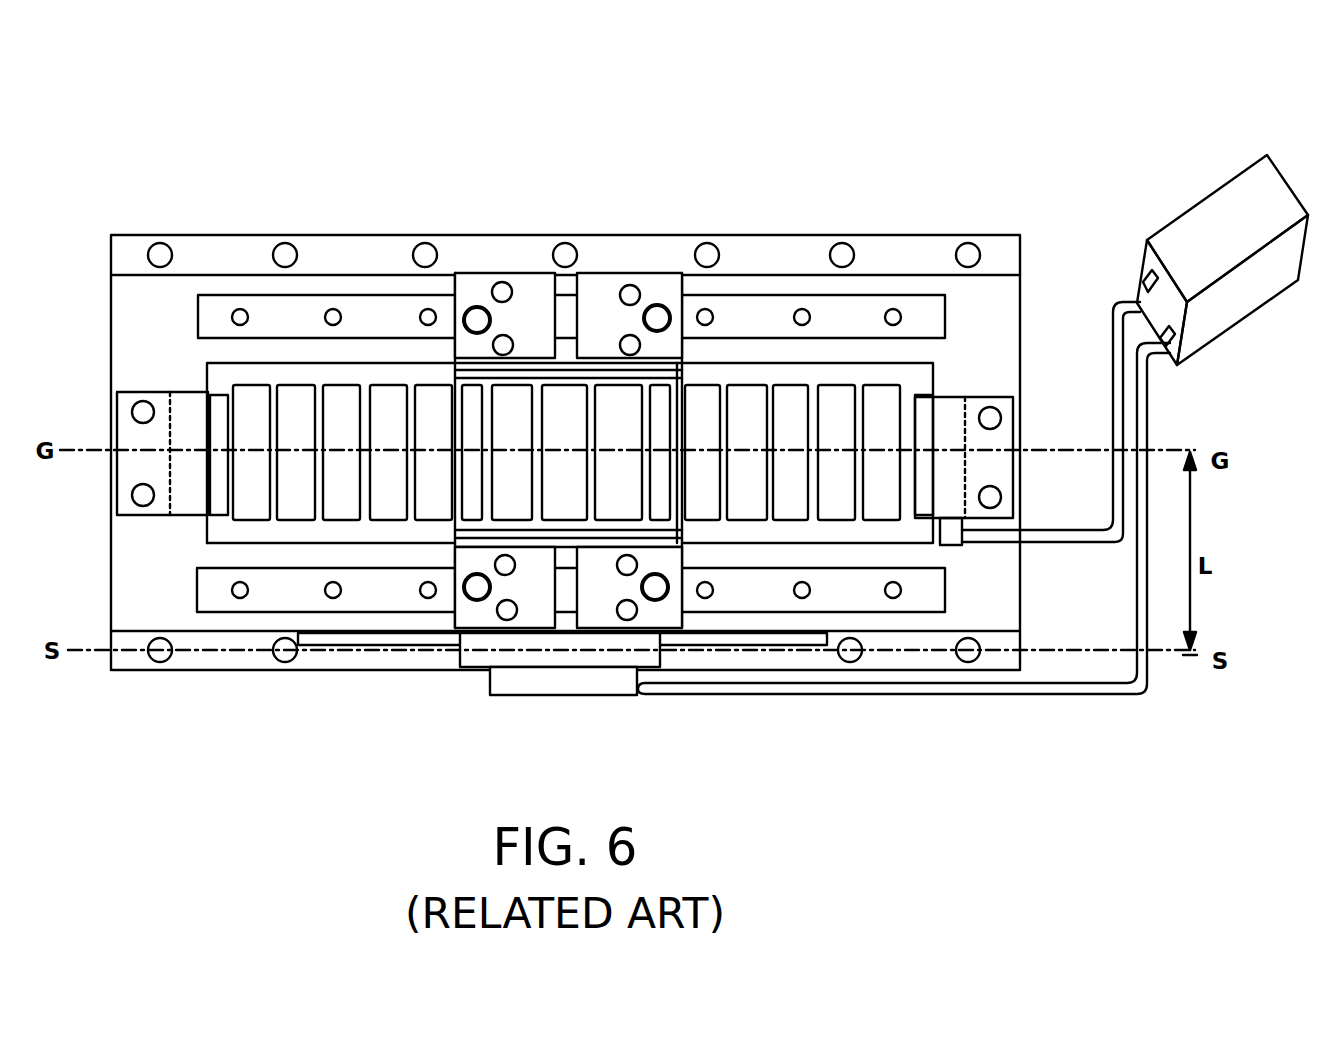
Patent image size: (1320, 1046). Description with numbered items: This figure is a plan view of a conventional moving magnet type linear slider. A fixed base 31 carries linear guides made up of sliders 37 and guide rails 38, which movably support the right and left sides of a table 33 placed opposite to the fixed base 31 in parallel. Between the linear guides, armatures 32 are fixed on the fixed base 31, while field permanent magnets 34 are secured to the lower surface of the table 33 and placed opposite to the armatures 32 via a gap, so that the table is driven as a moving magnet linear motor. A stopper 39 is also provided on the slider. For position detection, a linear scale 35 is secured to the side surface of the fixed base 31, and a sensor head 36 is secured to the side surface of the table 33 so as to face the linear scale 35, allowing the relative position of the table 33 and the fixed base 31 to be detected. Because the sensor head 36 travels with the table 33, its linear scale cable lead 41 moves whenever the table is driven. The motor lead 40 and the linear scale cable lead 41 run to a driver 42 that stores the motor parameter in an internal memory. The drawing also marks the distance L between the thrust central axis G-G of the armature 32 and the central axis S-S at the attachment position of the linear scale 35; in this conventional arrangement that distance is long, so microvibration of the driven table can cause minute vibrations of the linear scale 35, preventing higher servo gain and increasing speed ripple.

The fixed base 31 is at (322, 243).
The armature 32 is at (347, 395).
The table 33 is at (503, 283).
The field permanent magnet 34 is at (613, 405).
The linear scale 35 is at (158, 250).
The sensor head 36 is at (533, 678).
The slider 37 is at (537, 290).
The guide rail 38 is at (773, 317).
The stopper 39 is at (957, 402).
The motor lead 40 is at (1112, 370).
The linear scale cable lead 41 is at (1143, 688).
The driver 42 is at (1247, 187).